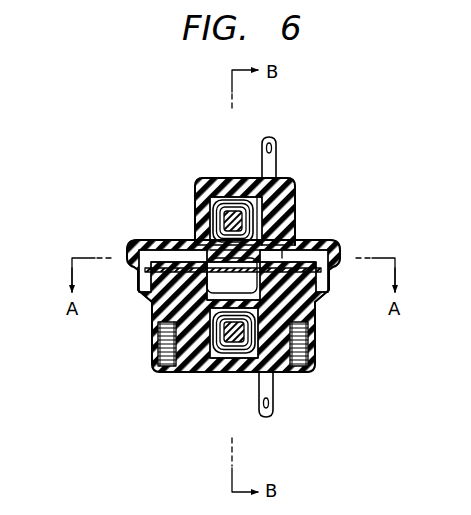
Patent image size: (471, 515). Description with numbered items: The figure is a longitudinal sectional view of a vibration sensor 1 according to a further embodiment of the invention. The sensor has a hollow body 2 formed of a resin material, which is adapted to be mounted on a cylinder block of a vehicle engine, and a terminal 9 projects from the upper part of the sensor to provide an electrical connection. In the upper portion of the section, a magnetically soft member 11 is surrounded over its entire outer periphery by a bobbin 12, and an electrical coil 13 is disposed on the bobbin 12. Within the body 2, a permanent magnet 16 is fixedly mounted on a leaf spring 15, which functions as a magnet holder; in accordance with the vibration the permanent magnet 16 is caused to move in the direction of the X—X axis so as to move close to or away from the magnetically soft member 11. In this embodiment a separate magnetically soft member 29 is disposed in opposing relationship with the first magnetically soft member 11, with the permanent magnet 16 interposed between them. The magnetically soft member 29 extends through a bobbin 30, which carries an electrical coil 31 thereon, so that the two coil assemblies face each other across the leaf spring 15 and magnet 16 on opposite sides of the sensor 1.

The vibration sensor 1 is at (336, 196).
The hollow body 2 is at (280, 192).
The terminal 9 is at (270, 162).
The magnetically soft member 11 is at (228, 208).
The bobbin 12 is at (236, 210).
The electrical coil 13 is at (216, 218).
The leaf spring 15 is at (190, 270).
The permanent magnet 16 is at (243, 267).
The magnetically soft member 29 is at (243, 344).
The bobbin 30 is at (236, 344).
The electrical coil 31 is at (222, 348).